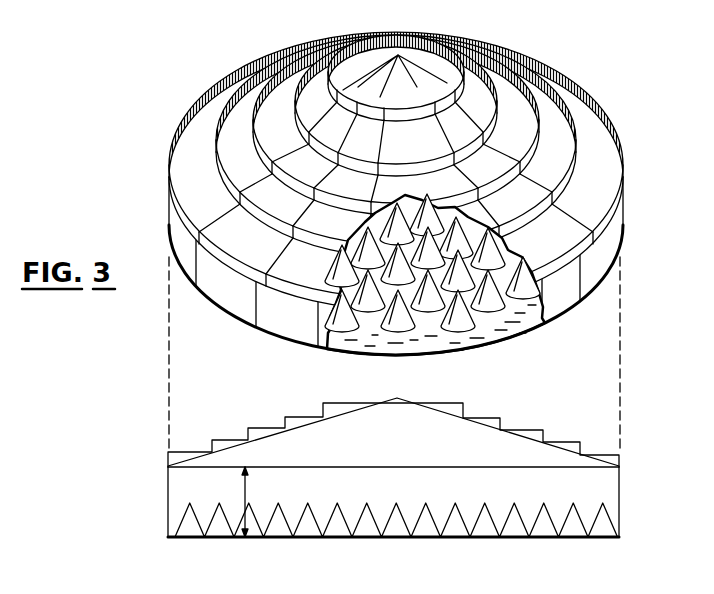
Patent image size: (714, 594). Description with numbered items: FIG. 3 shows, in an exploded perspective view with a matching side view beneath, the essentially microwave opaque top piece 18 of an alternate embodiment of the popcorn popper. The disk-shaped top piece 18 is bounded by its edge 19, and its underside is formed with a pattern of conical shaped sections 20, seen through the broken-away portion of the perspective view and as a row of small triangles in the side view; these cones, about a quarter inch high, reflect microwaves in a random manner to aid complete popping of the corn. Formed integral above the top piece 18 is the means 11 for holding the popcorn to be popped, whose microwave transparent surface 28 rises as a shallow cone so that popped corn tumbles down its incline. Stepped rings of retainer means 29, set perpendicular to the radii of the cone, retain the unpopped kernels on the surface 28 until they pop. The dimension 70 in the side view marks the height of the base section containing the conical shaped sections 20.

The means for holding the popcorn to be popped 11 is at (252, 60).
The top piece 18 is at (445, 350).
The edge of the top piece 19 is at (558, 318).
The conical shaped sections 20 is at (407, 343).
The microwave transparent surface 28 is at (420, 138).
The retainer means 29 is at (409, 33).
The height dimension 70 is at (246, 497).